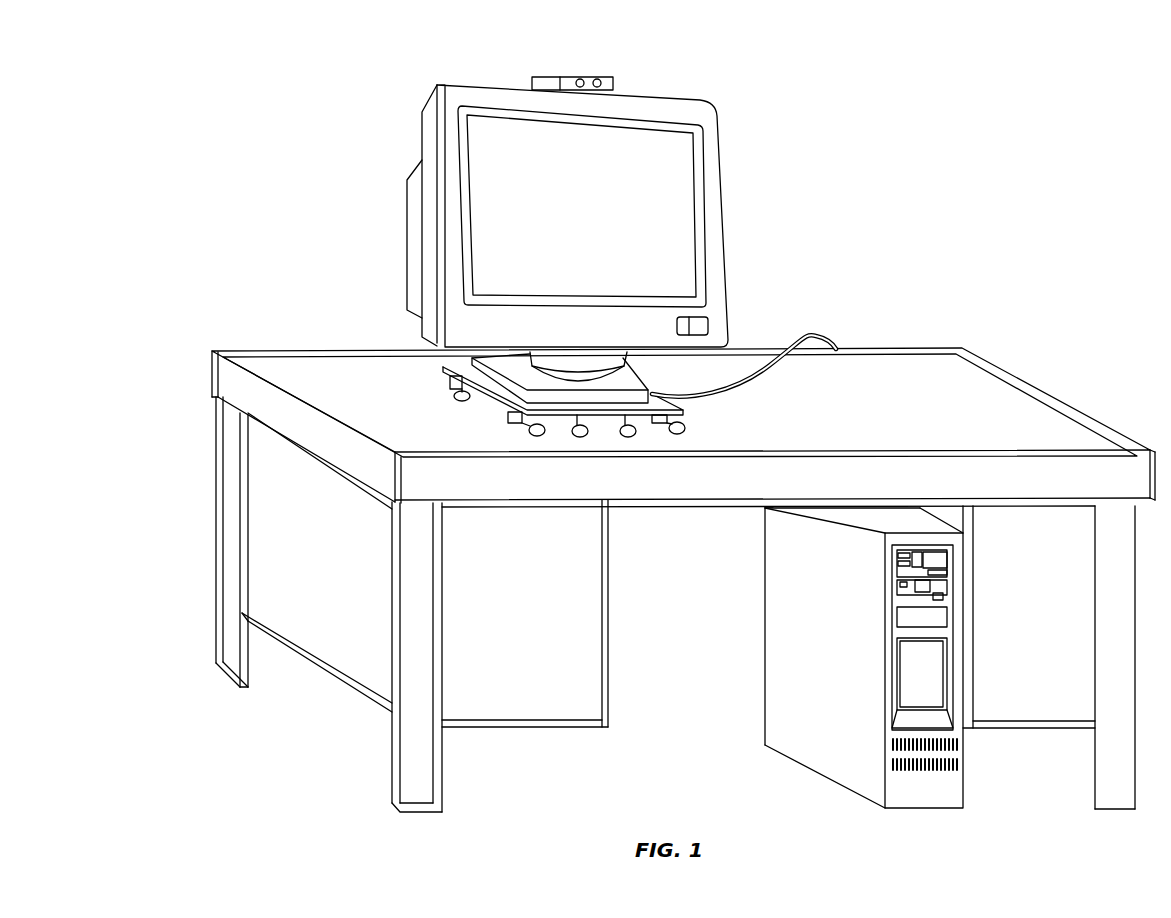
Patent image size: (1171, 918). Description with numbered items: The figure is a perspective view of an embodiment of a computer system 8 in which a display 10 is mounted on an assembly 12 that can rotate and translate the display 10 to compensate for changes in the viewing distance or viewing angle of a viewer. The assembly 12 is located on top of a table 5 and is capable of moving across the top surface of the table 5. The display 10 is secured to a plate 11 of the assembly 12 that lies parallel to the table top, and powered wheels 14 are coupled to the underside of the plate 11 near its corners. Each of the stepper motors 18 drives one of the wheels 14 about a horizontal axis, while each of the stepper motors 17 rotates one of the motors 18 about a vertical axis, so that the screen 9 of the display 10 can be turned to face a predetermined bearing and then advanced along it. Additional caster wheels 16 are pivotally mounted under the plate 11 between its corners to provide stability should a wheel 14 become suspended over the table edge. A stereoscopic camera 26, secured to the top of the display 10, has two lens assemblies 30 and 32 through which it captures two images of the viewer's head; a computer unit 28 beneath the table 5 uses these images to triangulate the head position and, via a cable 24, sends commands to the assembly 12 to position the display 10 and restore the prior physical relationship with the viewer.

The table 5 is at (683, 580).
The computer system 8 is at (856, 143).
The screen 9 is at (500, 154).
The display 10 is at (593, 216).
The plate 11 is at (507, 390).
The assembly 12 is at (573, 388).
The powered wheels 14 is at (562, 421).
The caster wheels 16 is at (581, 448).
The stepper motors 17 is at (450, 380).
The stepper motors 18 is at (450, 385).
The cable 24 is at (761, 345).
The stereoscopic camera 26 is at (586, 54).
The computer unit 28 is at (835, 658).
The lens assembly 30 is at (618, 65).
The lens assembly 32 is at (548, 64).